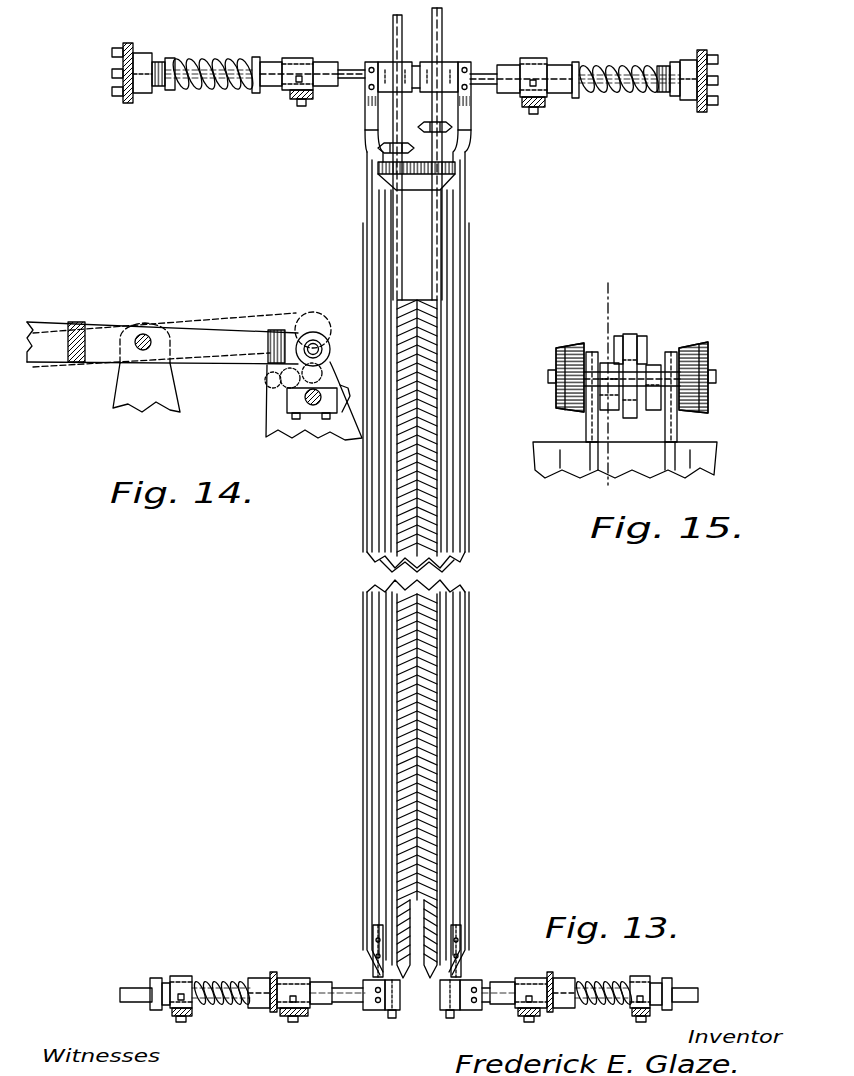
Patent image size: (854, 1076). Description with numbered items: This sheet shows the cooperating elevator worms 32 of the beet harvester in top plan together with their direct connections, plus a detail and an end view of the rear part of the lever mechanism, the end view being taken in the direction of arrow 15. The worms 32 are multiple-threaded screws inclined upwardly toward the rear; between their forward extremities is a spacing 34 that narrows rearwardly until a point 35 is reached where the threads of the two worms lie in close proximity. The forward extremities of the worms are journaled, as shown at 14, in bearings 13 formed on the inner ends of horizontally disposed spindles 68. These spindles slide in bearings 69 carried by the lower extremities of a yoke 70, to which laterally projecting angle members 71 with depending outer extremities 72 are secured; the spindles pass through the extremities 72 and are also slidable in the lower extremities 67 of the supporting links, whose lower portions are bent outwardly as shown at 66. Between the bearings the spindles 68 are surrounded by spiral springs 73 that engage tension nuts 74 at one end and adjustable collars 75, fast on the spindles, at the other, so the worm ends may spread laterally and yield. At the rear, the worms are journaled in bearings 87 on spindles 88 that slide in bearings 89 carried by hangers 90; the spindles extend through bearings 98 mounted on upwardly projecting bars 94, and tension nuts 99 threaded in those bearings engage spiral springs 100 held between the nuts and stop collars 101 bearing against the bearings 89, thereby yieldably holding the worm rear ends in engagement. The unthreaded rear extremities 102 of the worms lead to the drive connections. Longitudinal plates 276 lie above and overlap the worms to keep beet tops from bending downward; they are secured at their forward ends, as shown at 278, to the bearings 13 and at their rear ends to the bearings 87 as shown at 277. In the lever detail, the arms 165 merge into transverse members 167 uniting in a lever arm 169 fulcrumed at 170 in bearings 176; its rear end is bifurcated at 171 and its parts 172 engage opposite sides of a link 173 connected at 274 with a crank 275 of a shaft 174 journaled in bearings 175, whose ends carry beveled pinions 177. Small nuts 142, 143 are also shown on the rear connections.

In FIG. 13, the bearings 13 is at (366, 982).
In FIG. 13, the journal of worm forward extremity 14 is at (392, 1018).
In FIG. 15, the journal of worm forward extremity 14 is at (599, 308).
In FIG. 14, the arrow 15 is at (368, 338).
In FIG. 13, the worms or screws 32 is at (385, 570).
In FIG. 13, the spacing 34 is at (436, 1005).
In FIG. 13, the point 35 is at (432, 900).
In FIG. 13, the outwardly bent lower extremities of links 66 is at (273, 972).
In FIG. 13, the connection of links with spindles 67 is at (270, 1010).
In FIG. 13, the spindles 68 is at (130, 987).
In FIG. 13, the bearings 69 is at (318, 982).
In FIG. 13, the yoke 70 is at (290, 1016).
In FIG. 13, the angle members 71 is at (172, 1014).
In FIG. 13, the depending outer extremities 72 is at (182, 976).
In FIG. 13, the spiral springs 73 is at (208, 980).
In FIG. 13, the tension nuts 74 is at (156, 978).
In FIG. 13, the adjustable collars 75 is at (250, 1008).
In FIG. 13, the bearings 87 is at (378, 62).
In FIG. 13, the spindles 88 is at (350, 78).
In FIG. 13, the bearings 89 is at (330, 62).
In FIG. 13, the hangers 90 is at (292, 98).
In FIG. 13, the upwardly projecting bars 94 is at (126, 43).
In FIG. 13, the bearings 98 is at (145, 53).
In FIG. 13, the tension nuts 99 is at (158, 62).
In FIG. 13, the spiral springs 100 is at (210, 57).
In FIG. 13, the stop collars 101 is at (257, 56).
In FIG. 13, the upper and rear extremities of worms 102 is at (395, 55).
In FIG. 13, the nut 142 is at (452, 128).
In FIG. 13, the nut 143 is at (378, 148).
In FIG. 14, the arm 165 is at (46, 362).
In FIG. 14, the transverse members 167 is at (60, 322).
In FIG. 14, the lever arm 169 is at (204, 328).
In FIG. 14, the fulcrum 170 is at (144, 336).
In FIG. 14, the bifurcated rear extremity 171 is at (272, 330).
In FIG. 14, the parts of bifurcated extremity 172 is at (298, 330).
In FIG. 15, the parts of bifurcated extremity 172 is at (626, 340).
In FIG. 14, the link 173 is at (342, 412).
In FIG. 15, the link 173 is at (634, 372).
In FIG. 15, the shaft 174 is at (716, 378).
In FIG. 14, the bearings 175 is at (288, 398).
In FIG. 15, the bearings 175 is at (594, 352).
In FIG. 14, the bearings 176 is at (176, 384).
In FIG. 15, the beveled pinions 177 is at (560, 356).
In FIG. 14, the connection of link with crank 274 is at (312, 406).
In FIG. 15, the connection of link with crank 274 is at (608, 402).
In FIG. 15, the crank 275 is at (658, 408).
In FIG. 13, the plates 276 is at (367, 702).
In FIG. 13, the rear securing of plates 277 is at (368, 96).
In FIG. 13, the forward securing of plates 278 is at (372, 976).